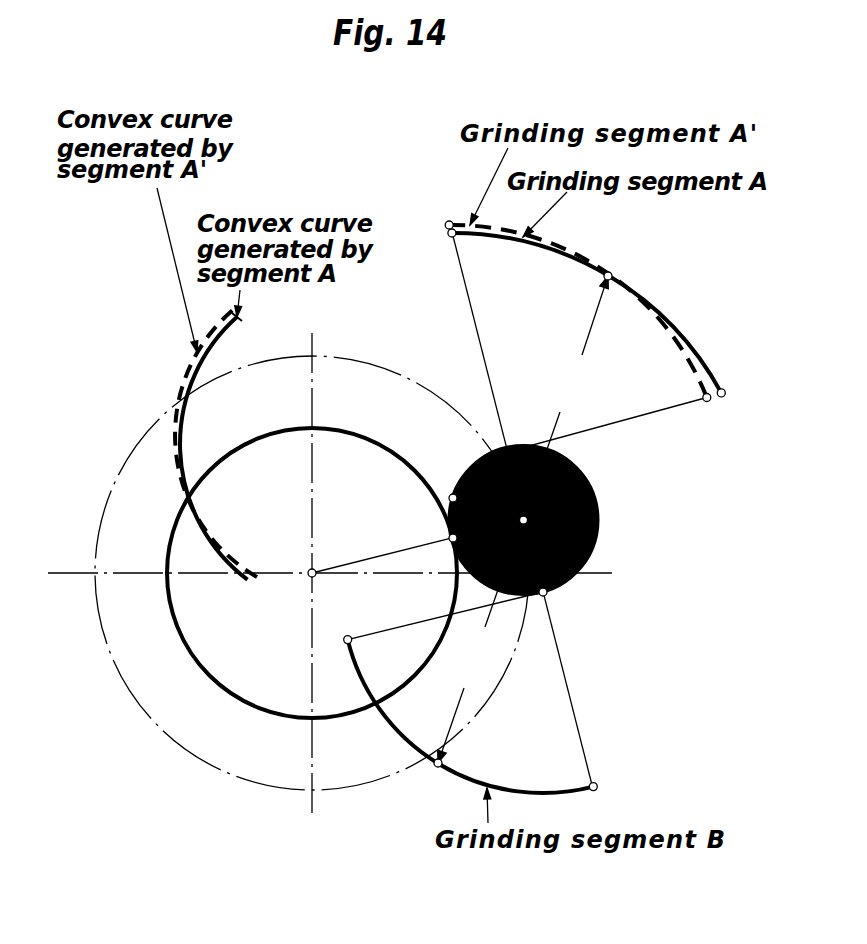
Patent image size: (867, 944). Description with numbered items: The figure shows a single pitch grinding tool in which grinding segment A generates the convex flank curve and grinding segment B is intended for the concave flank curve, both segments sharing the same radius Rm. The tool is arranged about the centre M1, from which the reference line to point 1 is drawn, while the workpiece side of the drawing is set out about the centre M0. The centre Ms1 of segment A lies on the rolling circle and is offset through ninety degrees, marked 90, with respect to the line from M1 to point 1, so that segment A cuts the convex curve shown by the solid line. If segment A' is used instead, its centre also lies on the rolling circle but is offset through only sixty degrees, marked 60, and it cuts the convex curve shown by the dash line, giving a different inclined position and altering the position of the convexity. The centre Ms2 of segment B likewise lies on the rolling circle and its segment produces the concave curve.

The point 1 is at (441, 233).
The 60° offset angle 60 is at (487, 480).
The 90° offset angle 90 is at (494, 504).
The workpiece centre M0 is at (329, 587).
The centre M1 is at (524, 520).
The centre of grinding segment A Ms1 is at (446, 507).
The centre of grinding segment B Ms2 is at (565, 602).
The radius of the grinding segments Rm is at (523, 519).